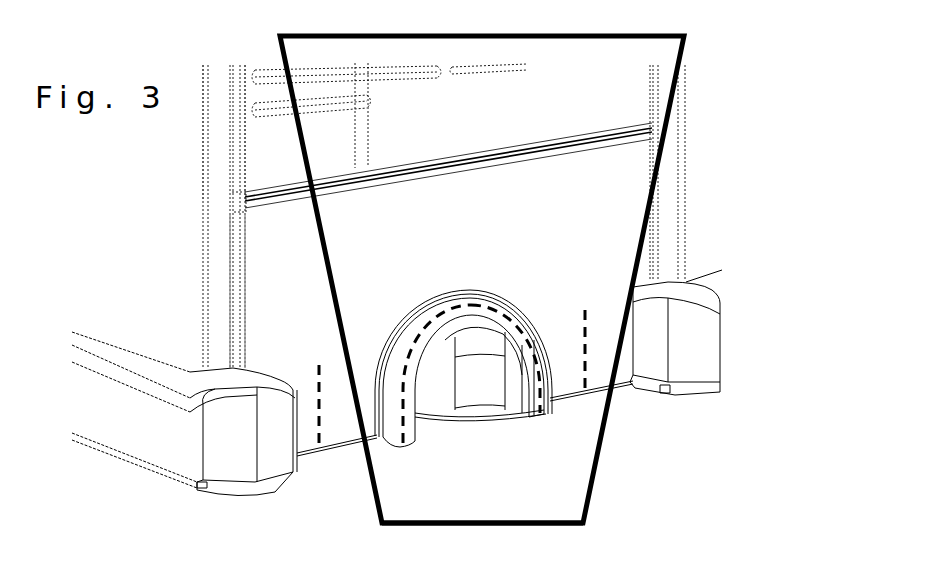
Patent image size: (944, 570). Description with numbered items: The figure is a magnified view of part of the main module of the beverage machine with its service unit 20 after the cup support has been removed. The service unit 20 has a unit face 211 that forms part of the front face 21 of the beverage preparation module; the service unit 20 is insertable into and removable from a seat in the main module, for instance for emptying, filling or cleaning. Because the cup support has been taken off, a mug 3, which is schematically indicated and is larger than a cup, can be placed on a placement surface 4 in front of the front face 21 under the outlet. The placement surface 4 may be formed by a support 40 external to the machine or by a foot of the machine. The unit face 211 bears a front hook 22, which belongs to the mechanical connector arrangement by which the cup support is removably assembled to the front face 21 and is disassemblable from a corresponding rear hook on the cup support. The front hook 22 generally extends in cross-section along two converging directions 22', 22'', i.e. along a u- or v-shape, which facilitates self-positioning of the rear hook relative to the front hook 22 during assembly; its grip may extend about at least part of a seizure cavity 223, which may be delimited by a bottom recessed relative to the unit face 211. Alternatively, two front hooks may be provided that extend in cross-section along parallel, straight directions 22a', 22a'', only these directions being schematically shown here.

The service unit 20 is at (723, 242).
The front face 21 is at (273, 162).
The unit face 211 is at (270, 263).
The support 40 is at (135, 492).
The front hook 22 is at (463, 312).
The converging direction 22' is at (424, 342).
The converging direction 22'' is at (523, 332).
The parallel direction 22a' is at (287, 378).
The parallel direction 22a'' is at (592, 302).
The seizure cavity 223 is at (473, 392).
The mug 3 is at (590, 490).
The placement surface 4 is at (505, 535).